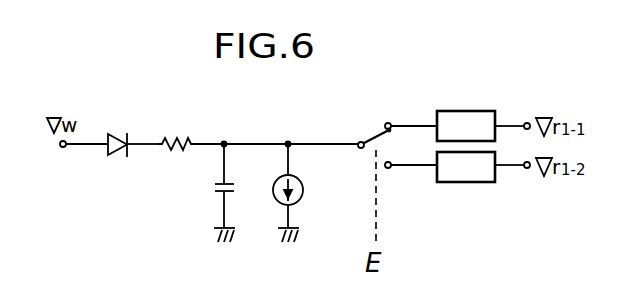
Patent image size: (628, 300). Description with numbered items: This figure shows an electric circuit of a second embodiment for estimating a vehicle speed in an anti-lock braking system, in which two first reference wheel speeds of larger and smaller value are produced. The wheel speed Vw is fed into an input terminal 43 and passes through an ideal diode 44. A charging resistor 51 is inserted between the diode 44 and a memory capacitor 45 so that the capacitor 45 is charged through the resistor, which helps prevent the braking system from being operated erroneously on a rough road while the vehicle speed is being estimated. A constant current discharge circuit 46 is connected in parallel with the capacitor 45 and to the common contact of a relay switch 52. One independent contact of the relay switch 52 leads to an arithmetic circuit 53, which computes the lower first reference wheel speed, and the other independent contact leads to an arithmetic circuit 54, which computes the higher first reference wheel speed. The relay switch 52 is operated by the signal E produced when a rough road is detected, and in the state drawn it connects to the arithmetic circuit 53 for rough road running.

The input terminal 43 is at (60, 147).
The ideal diode 44 is at (114, 153).
The charging resistor 51 is at (176, 151).
The memory capacitor 45 is at (216, 189).
The constant current discharge circuit 46 is at (302, 196).
The relay switch 52 is at (378, 133).
The arithmetic circuit 53 is at (468, 119).
The arithmetic circuit 54 is at (470, 176).